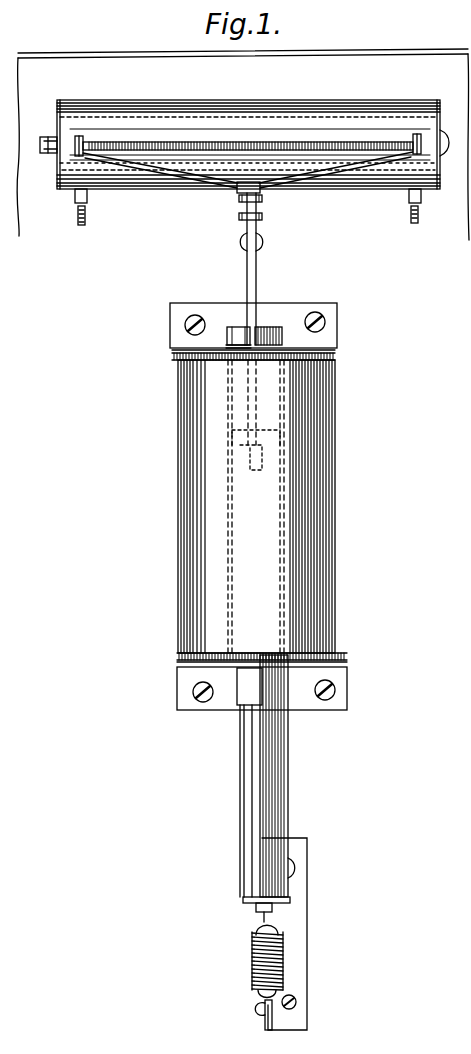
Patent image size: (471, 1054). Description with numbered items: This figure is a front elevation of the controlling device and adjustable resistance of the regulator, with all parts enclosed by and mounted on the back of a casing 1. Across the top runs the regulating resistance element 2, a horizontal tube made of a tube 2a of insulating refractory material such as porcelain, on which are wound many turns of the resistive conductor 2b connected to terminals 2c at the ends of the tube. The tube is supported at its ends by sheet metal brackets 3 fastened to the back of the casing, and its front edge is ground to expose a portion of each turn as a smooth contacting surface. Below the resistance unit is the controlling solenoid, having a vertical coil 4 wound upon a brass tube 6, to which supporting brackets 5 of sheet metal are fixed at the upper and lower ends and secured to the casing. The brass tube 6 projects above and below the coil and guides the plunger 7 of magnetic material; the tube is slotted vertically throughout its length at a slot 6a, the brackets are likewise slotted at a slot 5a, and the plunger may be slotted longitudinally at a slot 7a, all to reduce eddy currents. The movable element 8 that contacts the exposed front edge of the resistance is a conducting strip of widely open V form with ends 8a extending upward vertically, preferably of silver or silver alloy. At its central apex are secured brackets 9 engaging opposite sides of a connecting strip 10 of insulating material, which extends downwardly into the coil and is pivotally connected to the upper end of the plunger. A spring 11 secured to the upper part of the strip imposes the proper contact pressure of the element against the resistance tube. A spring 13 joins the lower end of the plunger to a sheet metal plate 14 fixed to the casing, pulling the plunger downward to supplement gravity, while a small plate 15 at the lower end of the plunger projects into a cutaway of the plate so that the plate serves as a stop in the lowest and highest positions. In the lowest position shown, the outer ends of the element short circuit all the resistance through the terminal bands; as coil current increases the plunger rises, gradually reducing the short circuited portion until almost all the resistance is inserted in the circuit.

The casing 1 is at (251, 57).
The regulating resistance element 2 is at (273, 118).
The tube 2a is at (358, 96).
The resistive conductor 2b is at (171, 147).
The terminals 2c is at (88, 201).
The sheet metal brackets 3 is at (57, 106).
The coil 4 is at (323, 528).
The supporting brackets 5 is at (326, 331).
The slot 5a is at (228, 345).
The brass tube 6 is at (280, 502).
The slot 6a is at (262, 326).
The plunger 7 is at (283, 772).
The slot 7a is at (266, 736).
The movable element 8 is at (178, 172).
The ends 8a is at (84, 142).
The brackets 9 is at (240, 200).
The connecting strip 10 is at (250, 265).
The spring 11 is at (259, 242).
The spring 13 is at (252, 951).
The sheet metal plate 14 is at (264, 1020).
The small plate 15 is at (282, 910).